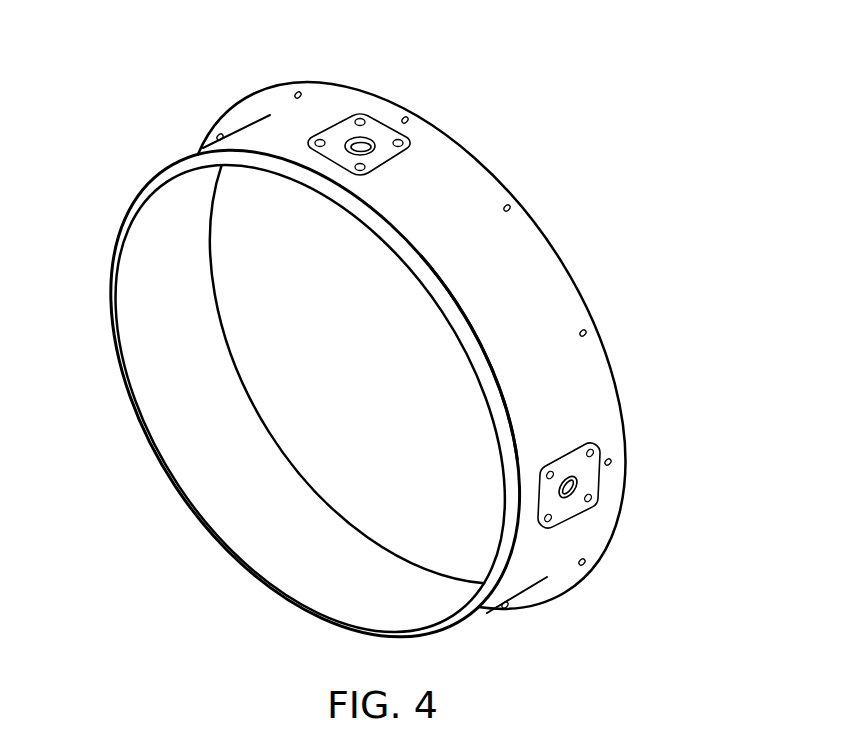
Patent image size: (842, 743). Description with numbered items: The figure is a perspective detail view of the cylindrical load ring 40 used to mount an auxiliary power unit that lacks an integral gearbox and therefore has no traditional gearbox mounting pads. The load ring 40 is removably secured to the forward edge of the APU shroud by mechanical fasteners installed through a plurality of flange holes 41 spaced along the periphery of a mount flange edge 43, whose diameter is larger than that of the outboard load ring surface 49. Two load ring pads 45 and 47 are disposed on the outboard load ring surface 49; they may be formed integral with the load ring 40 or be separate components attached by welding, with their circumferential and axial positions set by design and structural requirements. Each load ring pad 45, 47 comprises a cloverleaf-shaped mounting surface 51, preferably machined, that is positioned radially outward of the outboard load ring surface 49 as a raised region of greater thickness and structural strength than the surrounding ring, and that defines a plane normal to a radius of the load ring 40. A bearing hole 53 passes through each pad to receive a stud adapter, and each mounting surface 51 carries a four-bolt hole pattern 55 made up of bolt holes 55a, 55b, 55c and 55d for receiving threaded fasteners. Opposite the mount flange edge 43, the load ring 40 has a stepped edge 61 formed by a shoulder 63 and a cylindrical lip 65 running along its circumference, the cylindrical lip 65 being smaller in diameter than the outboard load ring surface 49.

The load ring 40 is at (185, 546).
The flange holes 41 is at (408, 119).
The mount flange edge 43 is at (583, 290).
The load ring pad 45 is at (418, 146).
The load ring pad 47 is at (597, 447).
The outboard load ring surface 49 is at (503, 238).
The mounting surface 51 is at (344, 138).
The bearing hole 53 is at (353, 133).
The four-bolt hole pattern 55 is at (603, 478).
The bolt hole 55a is at (362, 174).
The bolt hole 55b is at (400, 148).
The bolt hole 55c is at (362, 117).
The bolt hole 55d is at (318, 150).
The stepped edge 61 is at (171, 484).
The shoulder 63 is at (458, 315).
The cylindrical lip 65 is at (472, 357).